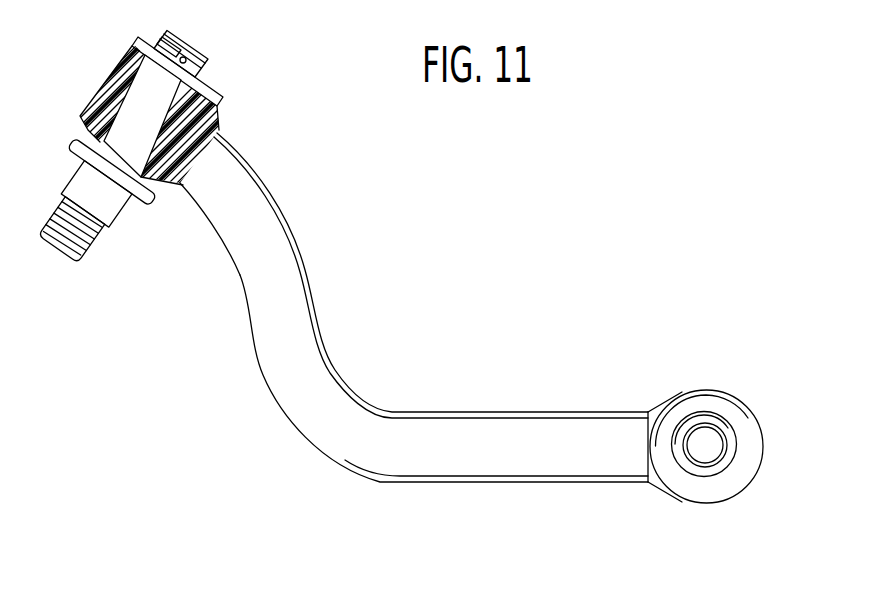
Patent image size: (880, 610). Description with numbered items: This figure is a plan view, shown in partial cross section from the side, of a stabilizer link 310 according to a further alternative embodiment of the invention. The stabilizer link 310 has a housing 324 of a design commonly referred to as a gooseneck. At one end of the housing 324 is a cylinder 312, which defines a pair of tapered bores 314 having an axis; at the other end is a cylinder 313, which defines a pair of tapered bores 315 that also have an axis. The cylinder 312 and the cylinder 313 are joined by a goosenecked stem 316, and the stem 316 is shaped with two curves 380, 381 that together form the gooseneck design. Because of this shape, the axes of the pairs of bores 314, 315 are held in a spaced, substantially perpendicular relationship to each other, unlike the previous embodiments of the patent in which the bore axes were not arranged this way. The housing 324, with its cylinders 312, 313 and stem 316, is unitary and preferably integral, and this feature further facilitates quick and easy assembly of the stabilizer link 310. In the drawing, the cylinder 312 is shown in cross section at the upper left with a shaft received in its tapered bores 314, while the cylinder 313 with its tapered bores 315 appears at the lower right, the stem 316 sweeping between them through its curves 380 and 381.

The stabilizer link 310 is at (372, 338).
The cylinder 312 is at (102, 80).
The cylinder 313 is at (722, 385).
The tapered bores 314 is at (160, 184).
The tapered bores 315 is at (737, 481).
The goosenecked stem 316 is at (292, 222).
The housing 324 is at (253, 337).
The curve 380 is at (377, 412).
The curve 381 is at (211, 221).